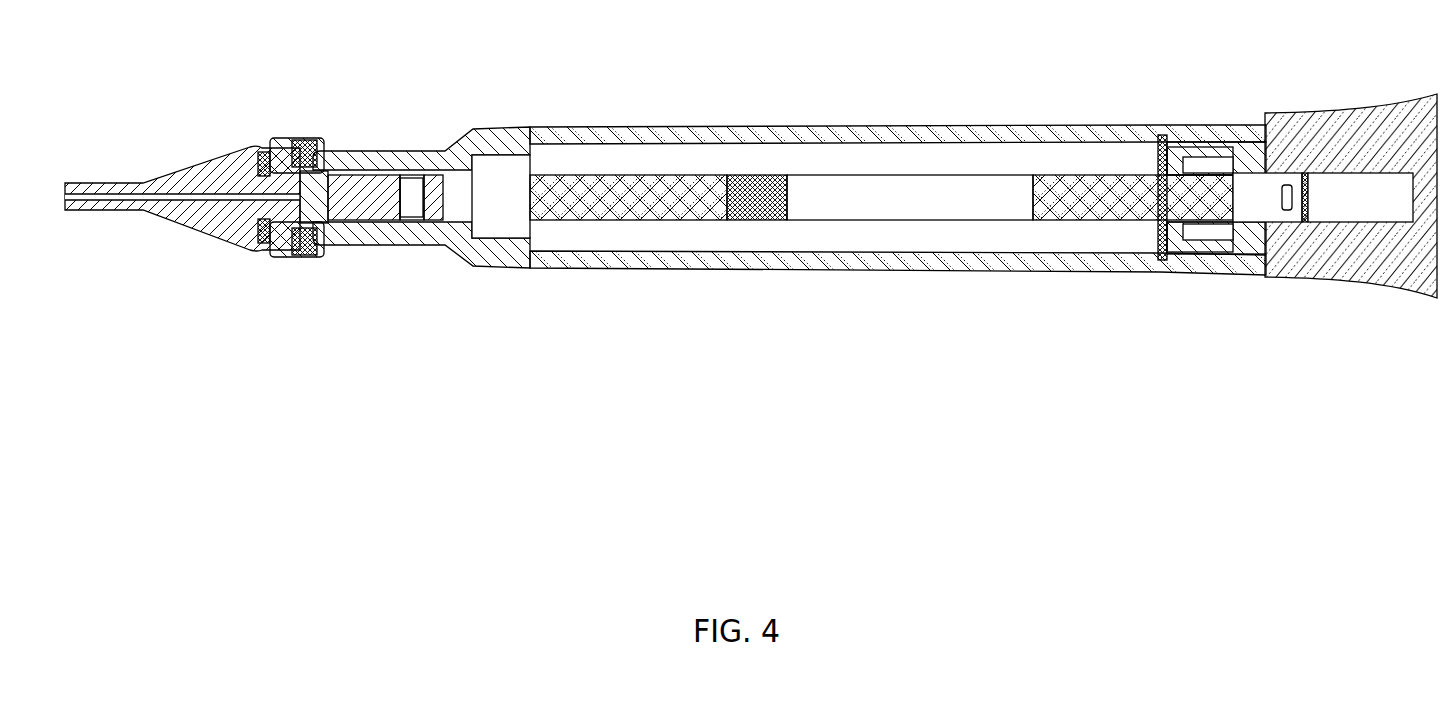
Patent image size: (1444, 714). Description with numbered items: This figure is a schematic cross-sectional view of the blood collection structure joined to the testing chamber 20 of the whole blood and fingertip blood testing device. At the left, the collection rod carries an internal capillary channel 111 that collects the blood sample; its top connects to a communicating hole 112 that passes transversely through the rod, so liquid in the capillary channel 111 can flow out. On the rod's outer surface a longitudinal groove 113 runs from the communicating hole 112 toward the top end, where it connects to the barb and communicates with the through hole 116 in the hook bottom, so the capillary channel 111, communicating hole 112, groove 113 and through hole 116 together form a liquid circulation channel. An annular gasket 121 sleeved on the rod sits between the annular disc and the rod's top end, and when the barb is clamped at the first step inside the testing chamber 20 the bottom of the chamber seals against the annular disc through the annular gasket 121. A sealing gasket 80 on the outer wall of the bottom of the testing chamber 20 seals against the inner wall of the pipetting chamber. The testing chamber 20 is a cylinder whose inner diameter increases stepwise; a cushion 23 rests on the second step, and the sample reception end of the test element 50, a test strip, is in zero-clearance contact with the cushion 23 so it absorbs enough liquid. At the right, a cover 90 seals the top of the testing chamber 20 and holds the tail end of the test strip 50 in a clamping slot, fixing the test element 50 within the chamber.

The capillary channel 111 is at (178, 195).
The communicating hole 112 is at (312, 192).
The groove 113 is at (400, 178).
The through hole 116 is at (417, 198).
The annular gasket 121 is at (267, 228).
The sealing gasket 80 is at (307, 243).
The cushion 23 is at (497, 176).
The testing chamber 20 is at (1090, 135).
The test element 50 is at (997, 198).
The cover 90 is at (1352, 243).